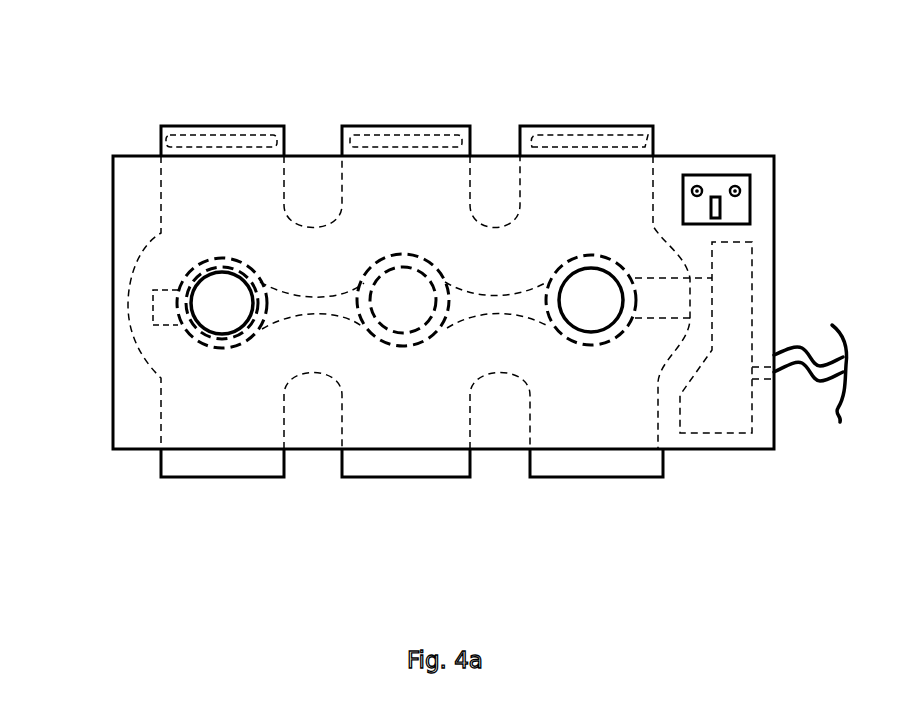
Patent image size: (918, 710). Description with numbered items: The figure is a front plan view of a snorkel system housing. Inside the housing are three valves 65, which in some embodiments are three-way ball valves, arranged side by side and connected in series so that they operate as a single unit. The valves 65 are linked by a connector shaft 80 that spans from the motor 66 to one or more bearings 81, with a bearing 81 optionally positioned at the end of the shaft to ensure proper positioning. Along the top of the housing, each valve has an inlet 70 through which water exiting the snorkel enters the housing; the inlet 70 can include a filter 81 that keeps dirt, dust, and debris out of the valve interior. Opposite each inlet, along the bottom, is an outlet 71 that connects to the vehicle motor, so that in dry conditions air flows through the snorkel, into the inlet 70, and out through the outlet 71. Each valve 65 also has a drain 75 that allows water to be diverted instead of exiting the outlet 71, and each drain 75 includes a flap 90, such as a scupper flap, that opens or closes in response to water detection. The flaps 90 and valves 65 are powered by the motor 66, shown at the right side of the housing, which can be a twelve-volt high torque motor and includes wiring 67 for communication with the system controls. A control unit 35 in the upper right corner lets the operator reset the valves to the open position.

The inlet 70 is at (552, 122).
The outlet 71 is at (262, 473).
The filter 81 is at (648, 140).
The valve 65 is at (212, 230).
The drain 75 is at (190, 328).
The flap 90 is at (222, 305).
The connector shaft 80 is at (318, 300).
The control unit 35 is at (740, 203).
The motor 66 is at (733, 348).
The wiring 67 is at (817, 380).